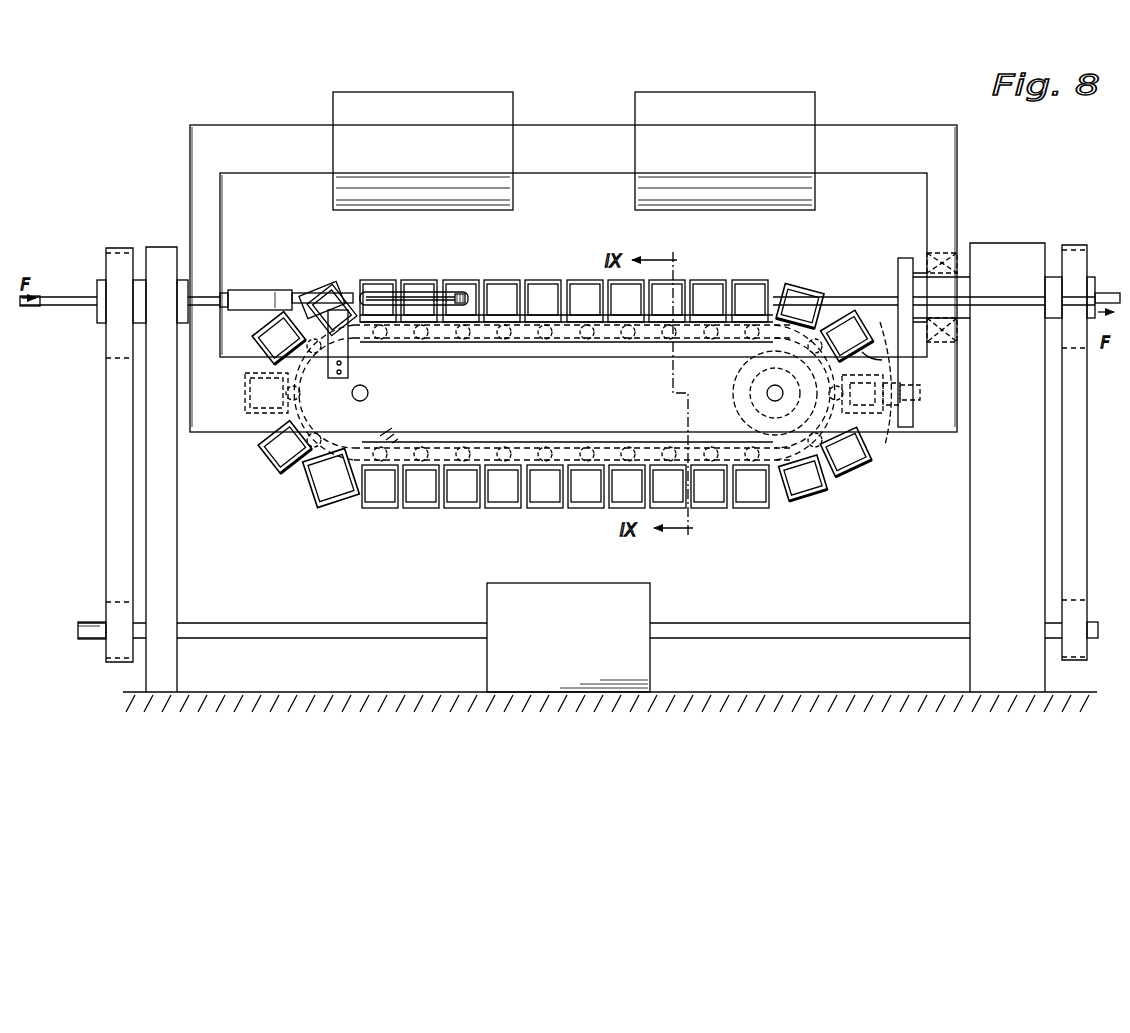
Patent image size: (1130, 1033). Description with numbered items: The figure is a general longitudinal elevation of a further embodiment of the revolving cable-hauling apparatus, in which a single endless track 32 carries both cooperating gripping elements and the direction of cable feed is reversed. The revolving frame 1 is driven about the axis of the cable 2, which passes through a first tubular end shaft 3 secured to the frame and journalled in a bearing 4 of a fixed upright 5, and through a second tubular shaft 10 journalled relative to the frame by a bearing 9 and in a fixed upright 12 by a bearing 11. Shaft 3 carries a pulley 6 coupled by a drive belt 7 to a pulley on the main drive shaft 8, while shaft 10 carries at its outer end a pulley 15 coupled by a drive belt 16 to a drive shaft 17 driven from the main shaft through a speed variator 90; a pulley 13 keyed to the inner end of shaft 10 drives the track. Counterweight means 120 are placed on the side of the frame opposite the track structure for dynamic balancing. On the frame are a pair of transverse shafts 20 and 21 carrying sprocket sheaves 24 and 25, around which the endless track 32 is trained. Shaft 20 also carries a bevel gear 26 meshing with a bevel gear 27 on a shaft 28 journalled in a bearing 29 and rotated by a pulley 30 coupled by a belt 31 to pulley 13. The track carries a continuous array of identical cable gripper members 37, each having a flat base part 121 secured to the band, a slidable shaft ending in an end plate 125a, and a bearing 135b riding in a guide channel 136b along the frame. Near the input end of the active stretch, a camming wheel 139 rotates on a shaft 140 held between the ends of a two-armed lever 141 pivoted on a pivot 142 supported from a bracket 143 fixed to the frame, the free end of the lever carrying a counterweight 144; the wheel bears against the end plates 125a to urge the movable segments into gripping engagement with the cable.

The revolving frame 1 is at (250, 133).
The cable 2 is at (66, 306).
The first tubular end shaft 3 is at (139, 282).
The bearing 4 is at (160, 256).
The fixed upright 5 is at (178, 507).
The pulley 6 is at (108, 258).
The drive belt 7 is at (116, 486).
The main drive shaft 8 is at (92, 626).
The bearing 9 is at (957, 252).
The second tubular shaft 10 is at (963, 283).
The bearing 11 is at (1031, 245).
The fixed upright 12 is at (995, 512).
The pulley 13 is at (905, 262).
The pulley 15 is at (1078, 270).
The drive belt 16 is at (1080, 435).
The drive shaft 17 is at (932, 626).
The transverse shaft 20 is at (767, 393).
The transverse shaft 21 is at (368, 392).
The sprocket sheave 24 is at (760, 425).
The sprocket sheave 25 is at (385, 438).
The bevel gear 26 is at (752, 380).
The bevel gear 27 is at (872, 345).
The shaft 28 is at (888, 438).
The bearing 29 is at (895, 375).
The pulley 30 is at (920, 416).
The belt 31 is at (878, 359).
The endless track 32 is at (306, 468).
The cable gripper member 37 is at (327, 512).
The speed variator 90 is at (590, 592).
The counterweight means 120 is at (645, 105).
The base part 121 is at (802, 289).
The end plate 125a is at (760, 293).
The bearing 135b is at (703, 342).
The guide channel 136b is at (603, 344).
The camming wheel 139 is at (461, 296).
The shaft 140 is at (416, 292).
The two-armed lever 141 is at (356, 292).
The pivot 142 is at (320, 289).
The bracket 143 is at (349, 370).
The counterweight 144 is at (261, 294).